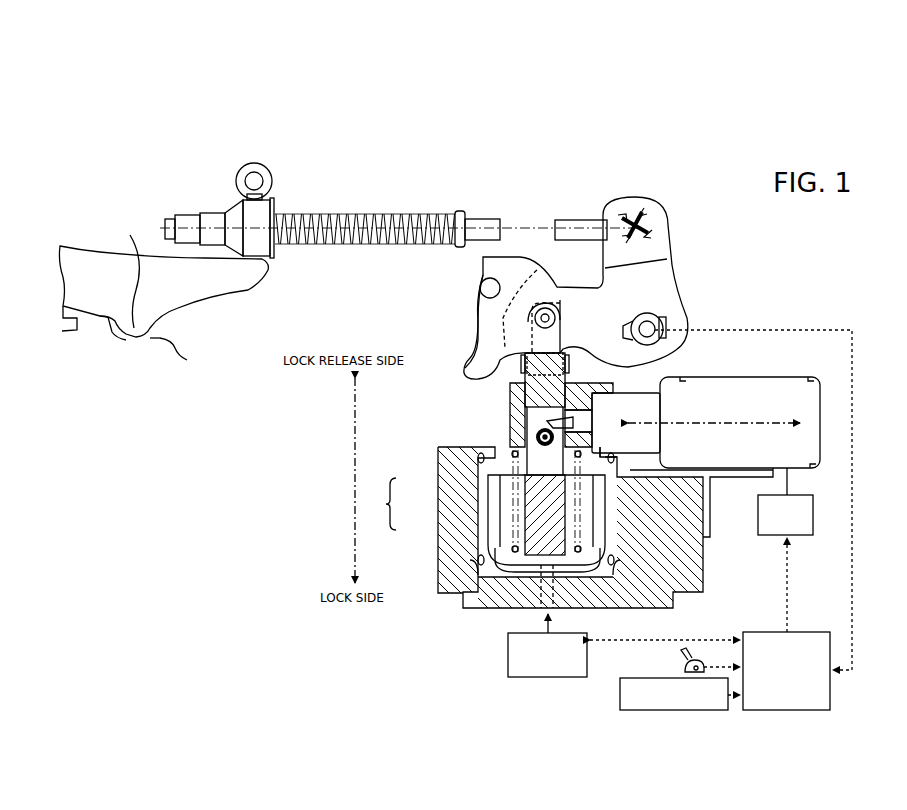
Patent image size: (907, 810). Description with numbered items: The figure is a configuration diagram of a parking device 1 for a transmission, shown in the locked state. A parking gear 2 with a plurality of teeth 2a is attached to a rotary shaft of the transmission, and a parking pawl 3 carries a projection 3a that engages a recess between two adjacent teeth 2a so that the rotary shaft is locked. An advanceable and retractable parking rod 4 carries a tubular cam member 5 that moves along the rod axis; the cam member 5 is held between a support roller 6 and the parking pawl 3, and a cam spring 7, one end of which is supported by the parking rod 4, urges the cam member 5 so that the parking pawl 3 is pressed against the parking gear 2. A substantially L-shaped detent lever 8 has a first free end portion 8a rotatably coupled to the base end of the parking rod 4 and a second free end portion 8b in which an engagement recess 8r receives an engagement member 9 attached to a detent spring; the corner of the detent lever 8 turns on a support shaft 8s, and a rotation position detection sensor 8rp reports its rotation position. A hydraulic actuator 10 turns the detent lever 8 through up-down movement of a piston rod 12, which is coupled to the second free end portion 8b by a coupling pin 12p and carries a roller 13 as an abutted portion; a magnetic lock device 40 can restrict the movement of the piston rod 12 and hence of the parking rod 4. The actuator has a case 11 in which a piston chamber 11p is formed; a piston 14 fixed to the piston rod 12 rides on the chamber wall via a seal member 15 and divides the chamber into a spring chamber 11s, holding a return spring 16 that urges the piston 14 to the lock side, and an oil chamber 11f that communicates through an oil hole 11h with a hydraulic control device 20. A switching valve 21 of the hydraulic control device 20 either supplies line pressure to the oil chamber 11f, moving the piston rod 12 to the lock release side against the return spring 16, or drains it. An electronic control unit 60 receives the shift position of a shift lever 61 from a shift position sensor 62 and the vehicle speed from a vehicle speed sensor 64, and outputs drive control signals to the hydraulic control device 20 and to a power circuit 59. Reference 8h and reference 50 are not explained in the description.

The parking device 1 is at (725, 220).
The parking gear 2 is at (190, 354).
The teeth 2a is at (160, 340).
The parking pawl 3 is at (93, 258).
The projection 3a is at (133, 270).
The parking rod 4 is at (578, 219).
The cam member 5 is at (278, 252).
The support roller 6 is at (273, 180).
The cam spring 7 is at (374, 212).
The detent lever 8 is at (678, 278).
The first free end portion 8a is at (657, 222).
The second free end portion 8b is at (478, 355).
The slot hole 8h is at (549, 300).
The engagement recess 8r is at (487, 286).
The rotation position detection sensor 8rp is at (665, 320).
The support shaft 8s is at (660, 316).
The engagement member 9 is at (484, 290).
The hydraulic actuator 10 is at (706, 572).
The case 11 is at (465, 480).
The oil chamber 11f is at (495, 540).
The oil hole 11h is at (541, 610).
The piston chamber 11p is at (379, 504).
The spring chamber 11s is at (502, 492).
The piston rod 12 is at (543, 395).
The coupling pin 12p is at (535, 317).
The roller 13 is at (537, 437).
The piston 14 is at (606, 565).
The seal member 15 is at (620, 568).
The return spring 16 is at (515, 462).
The hydraulic control device 20 is at (508, 656).
The switching valve 21 is at (572, 423).
The magnetic lock device 40 is at (785, 375).
The actuator 50 is at (740, 377).
The power circuit 59 is at (800, 538).
The electronic control unit 60 is at (792, 632).
The shift lever 61 is at (684, 657).
The shift position sensor 62 is at (686, 670).
The vehicle speed sensor 64 is at (620, 697).